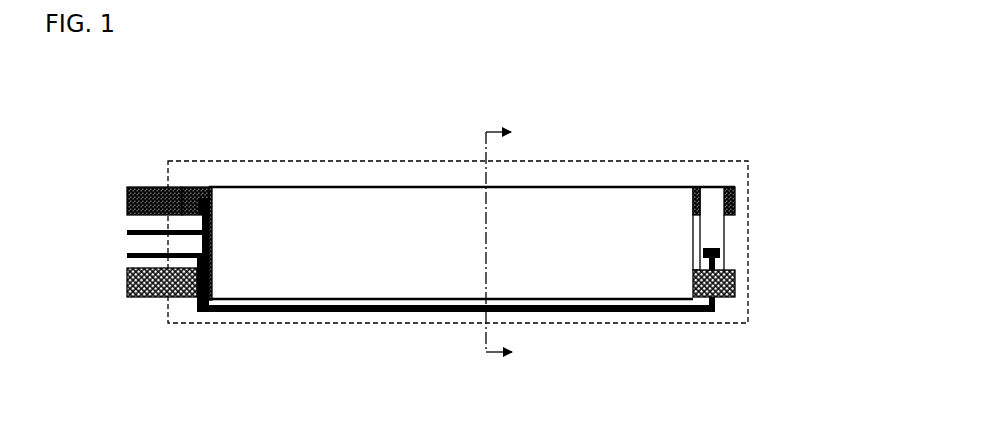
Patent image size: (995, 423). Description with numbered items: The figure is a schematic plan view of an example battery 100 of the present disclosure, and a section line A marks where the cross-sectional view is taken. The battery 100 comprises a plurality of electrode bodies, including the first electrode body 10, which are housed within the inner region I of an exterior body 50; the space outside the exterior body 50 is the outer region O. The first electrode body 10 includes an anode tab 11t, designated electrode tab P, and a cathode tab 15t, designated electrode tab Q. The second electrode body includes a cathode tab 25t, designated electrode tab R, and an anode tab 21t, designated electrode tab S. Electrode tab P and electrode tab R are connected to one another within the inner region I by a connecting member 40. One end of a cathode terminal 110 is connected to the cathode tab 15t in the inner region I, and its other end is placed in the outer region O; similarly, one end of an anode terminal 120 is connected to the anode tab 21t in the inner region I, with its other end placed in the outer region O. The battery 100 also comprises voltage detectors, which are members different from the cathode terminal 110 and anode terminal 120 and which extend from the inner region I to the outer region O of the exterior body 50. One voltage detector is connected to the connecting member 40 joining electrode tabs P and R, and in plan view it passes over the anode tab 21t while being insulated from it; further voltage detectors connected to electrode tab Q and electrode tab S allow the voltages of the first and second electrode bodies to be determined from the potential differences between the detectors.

The battery 100 is at (721, 116).
The first electrode body 10 is at (333, 210).
The cathode terminal 110 is at (141, 200).
The cathode tab 15t is at (195, 200).
The anode terminal 120 is at (145, 298).
The anode tab 21t is at (200, 298).
The exterior body 50 is at (281, 325).
The cathode tab 25t is at (732, 202).
The connecting member 40 is at (715, 242).
The anode tab 11t is at (735, 283).
The inner region I is at (308, 317).
The outer region O is at (354, 341).
The section line A- A is at (489, 243).